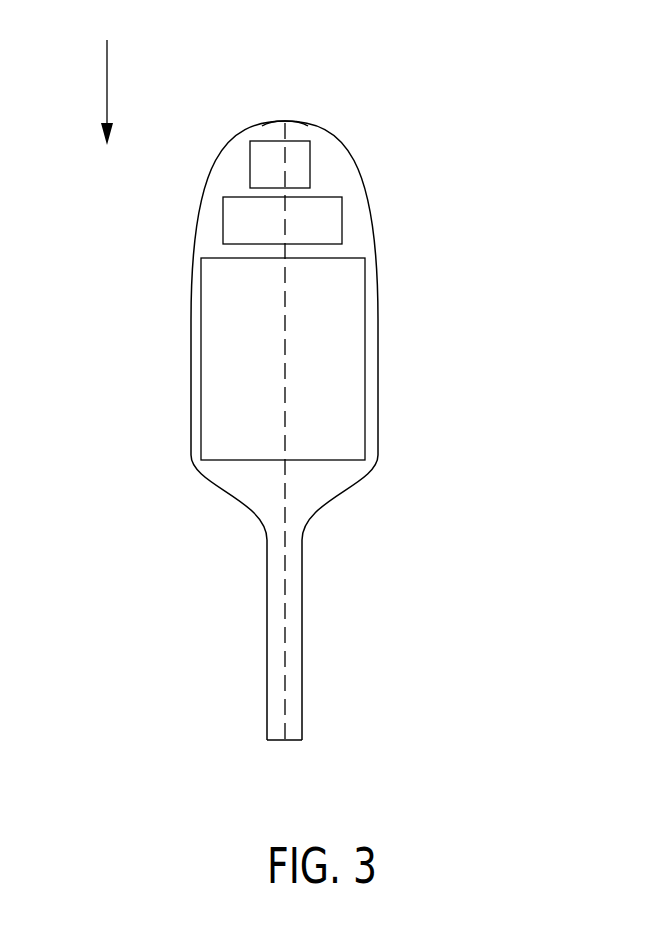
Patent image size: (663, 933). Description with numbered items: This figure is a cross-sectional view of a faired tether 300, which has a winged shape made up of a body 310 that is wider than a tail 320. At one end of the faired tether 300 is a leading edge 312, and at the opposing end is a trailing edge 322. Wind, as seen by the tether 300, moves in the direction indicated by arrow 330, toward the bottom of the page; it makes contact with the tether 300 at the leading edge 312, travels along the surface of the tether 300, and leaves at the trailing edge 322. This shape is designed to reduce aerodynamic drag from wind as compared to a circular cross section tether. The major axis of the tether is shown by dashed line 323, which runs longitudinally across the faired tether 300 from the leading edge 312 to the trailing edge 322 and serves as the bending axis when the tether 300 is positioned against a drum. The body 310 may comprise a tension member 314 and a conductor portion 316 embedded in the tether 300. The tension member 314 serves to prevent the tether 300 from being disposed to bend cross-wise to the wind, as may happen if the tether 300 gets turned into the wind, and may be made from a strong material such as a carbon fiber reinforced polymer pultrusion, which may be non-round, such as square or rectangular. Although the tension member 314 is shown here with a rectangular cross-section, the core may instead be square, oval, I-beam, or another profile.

The faired tether 300 is at (413, 273).
The body 310 is at (192, 315).
The leading edge 312 is at (279, 121).
The tension member 314 is at (217, 395).
The conductor portion 316 is at (224, 176).
The tail 320 is at (278, 610).
The trailing edge 322 is at (275, 741).
The major axis 323 is at (286, 163).
The arrow 330 is at (103, 79).